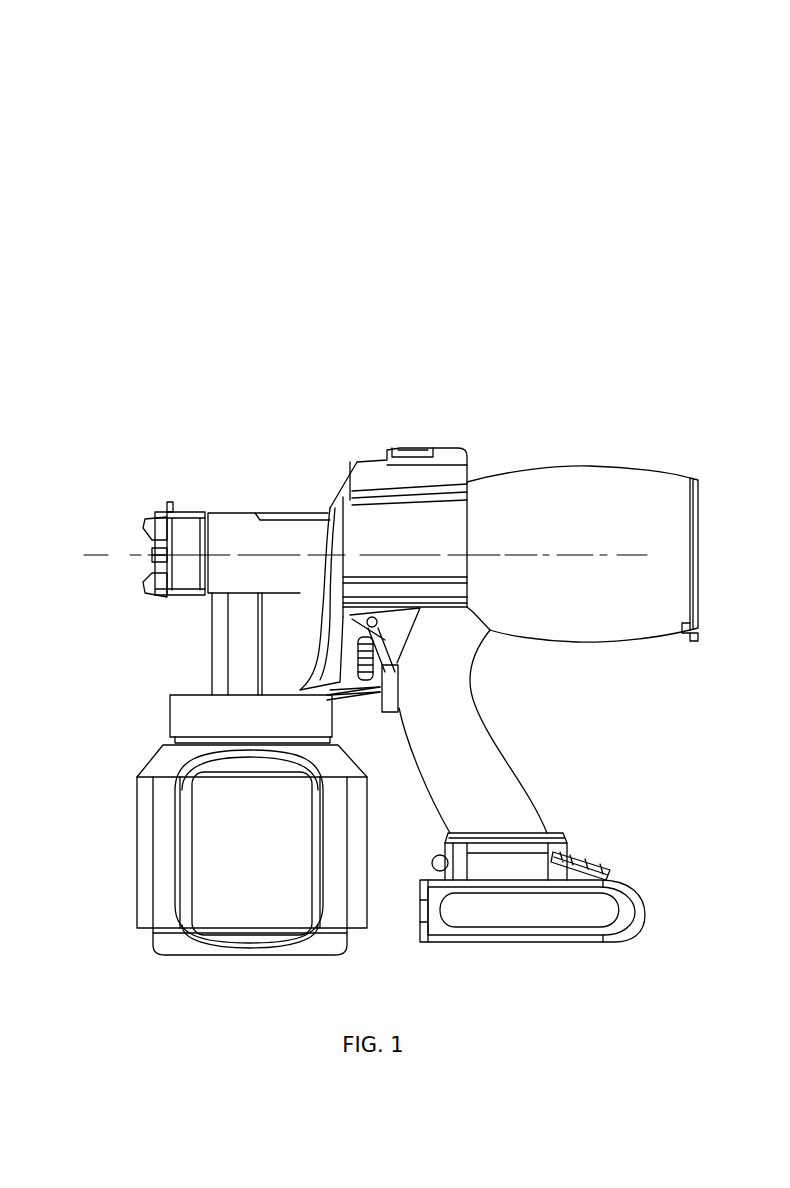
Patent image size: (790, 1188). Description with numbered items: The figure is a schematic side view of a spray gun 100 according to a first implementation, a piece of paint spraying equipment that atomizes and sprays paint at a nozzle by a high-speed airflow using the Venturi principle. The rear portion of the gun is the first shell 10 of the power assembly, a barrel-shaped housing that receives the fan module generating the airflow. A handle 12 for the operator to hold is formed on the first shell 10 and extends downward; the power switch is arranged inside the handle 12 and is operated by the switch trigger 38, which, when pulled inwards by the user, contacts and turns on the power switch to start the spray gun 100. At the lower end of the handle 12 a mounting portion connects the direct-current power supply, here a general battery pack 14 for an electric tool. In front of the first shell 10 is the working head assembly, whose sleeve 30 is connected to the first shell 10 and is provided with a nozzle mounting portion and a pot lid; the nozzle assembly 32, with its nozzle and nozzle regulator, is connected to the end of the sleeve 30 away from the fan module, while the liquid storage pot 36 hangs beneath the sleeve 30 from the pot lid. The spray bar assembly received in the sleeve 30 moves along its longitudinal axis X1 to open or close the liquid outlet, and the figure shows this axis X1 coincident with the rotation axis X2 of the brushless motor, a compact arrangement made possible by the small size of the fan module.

The spray gun 100 is at (647, 72).
The first shell 10 is at (547, 511).
The handle 12 is at (483, 760).
The battery pack 14 is at (580, 903).
The sleeve 30 is at (270, 530).
The nozzle assembly 32 is at (188, 532).
The liquid storage pot 36 is at (202, 867).
The switch trigger 38 is at (322, 580).
The longitudinal axis X1 is at (121, 555).
The rotation axis X2 is at (624, 553).